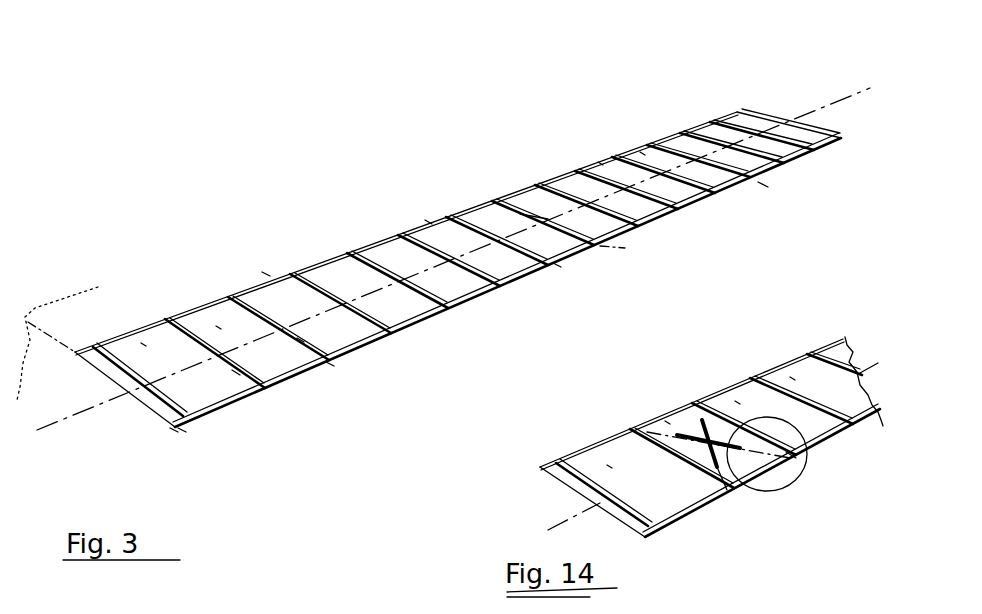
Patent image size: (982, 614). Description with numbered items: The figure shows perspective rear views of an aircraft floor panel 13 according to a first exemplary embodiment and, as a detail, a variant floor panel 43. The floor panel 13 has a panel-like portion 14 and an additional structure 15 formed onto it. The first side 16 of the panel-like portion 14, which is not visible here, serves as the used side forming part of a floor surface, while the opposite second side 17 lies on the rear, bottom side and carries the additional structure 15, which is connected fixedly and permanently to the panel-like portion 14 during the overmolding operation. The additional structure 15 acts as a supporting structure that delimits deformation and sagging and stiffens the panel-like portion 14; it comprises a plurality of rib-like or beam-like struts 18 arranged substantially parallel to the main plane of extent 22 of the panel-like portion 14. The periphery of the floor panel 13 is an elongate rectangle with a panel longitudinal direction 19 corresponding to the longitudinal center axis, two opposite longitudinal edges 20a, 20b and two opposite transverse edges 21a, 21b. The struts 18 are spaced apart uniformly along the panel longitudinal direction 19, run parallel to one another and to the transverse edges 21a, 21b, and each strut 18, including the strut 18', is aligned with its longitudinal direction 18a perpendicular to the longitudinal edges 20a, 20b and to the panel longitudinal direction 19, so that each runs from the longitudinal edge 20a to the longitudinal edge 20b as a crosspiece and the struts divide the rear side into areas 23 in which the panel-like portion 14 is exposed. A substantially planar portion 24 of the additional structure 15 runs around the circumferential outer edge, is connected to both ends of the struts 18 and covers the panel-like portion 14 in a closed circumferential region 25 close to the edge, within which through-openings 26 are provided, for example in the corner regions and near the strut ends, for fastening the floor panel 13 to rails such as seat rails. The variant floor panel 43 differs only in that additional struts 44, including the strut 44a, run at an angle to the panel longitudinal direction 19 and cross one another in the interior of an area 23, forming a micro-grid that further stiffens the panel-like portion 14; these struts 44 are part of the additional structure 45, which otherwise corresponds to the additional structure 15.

In FIG. 3, the floor panel 13 is at (254, 168).
In FIG. 3, the panel-like portion 14 is at (332, 278).
In FIG. 14, the panel-like portion 14 is at (687, 493).
In FIG. 3, the additional structure 15 is at (300, 340).
In FIG. 3, the first side 16 is at (107, 402).
In FIG. 3, the second side 17 is at (436, 160).
In FIG. 3, the struts 18 is at (489, 232).
In FIG. 14, the struts 18 is at (682, 444).
In FIG. 3, the rung 18' is at (546, 161).
In FIG. 3, the longitudinal direction of the strut 18a is at (624, 248).
In FIG. 3, the panel longitudinal direction 19 is at (843, 100).
In FIG. 14, the panel longitudinal direction 19 is at (880, 363).
In FIG. 3, the longitudinal edge 20a is at (266, 274).
In FIG. 3, the longitudinal edge 20b is at (766, 187).
In FIG. 3, the transverse edge 21a is at (169, 432).
In FIG. 3, the transverse edge 21b is at (847, 129).
In FIG. 3, the main plane of extent 22 is at (98, 337).
In FIG. 3, the areas 23 is at (141, 342).
In FIG. 14, the areas 23 is at (608, 463).
In FIG. 3, the planar portion 24 is at (428, 222).
In FIG. 3, the circumferential region 25 is at (724, 183).
In FIG. 3, the through-openings 26 is at (561, 269).
In FIG. 14, the floor panel 43 is at (543, 434).
In FIG. 14, the additional struts 44 is at (703, 478).
In FIG. 14, the connector end 44a is at (790, 468).
In FIG. 14, the additional structure 45 is at (822, 445).